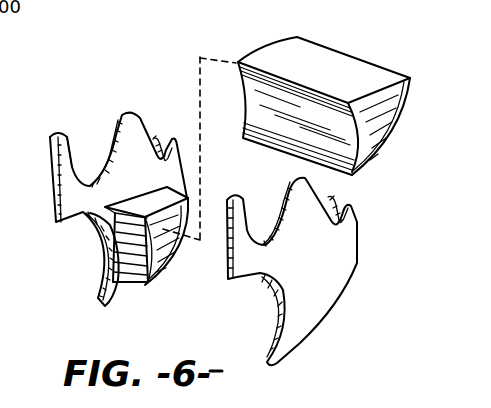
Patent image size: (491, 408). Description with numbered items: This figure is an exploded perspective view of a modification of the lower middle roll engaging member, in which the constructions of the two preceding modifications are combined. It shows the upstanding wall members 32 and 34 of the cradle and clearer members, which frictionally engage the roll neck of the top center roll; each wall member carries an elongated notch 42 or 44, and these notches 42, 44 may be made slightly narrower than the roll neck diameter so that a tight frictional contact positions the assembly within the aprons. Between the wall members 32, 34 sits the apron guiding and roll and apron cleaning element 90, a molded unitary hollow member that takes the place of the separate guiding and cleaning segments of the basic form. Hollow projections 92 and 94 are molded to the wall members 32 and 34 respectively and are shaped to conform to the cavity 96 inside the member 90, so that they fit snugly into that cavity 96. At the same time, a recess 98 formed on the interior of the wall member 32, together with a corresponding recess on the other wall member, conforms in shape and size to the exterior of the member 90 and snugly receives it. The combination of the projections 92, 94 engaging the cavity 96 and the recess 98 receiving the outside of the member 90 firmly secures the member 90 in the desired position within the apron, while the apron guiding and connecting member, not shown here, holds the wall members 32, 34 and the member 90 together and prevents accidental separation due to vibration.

The wall member 32 is at (50, 175).
The wall member 34 is at (337, 308).
The elongated notch 42 is at (113, 138).
The elongated notch 44 is at (283, 214).
The apron guiding and roll and apron cleaning element 90 is at (300, 40).
The hollow projection 92 is at (139, 290).
The hollow projection 94 is at (260, 322).
The cavity 96 is at (399, 117).
The recess 98 is at (130, 198).